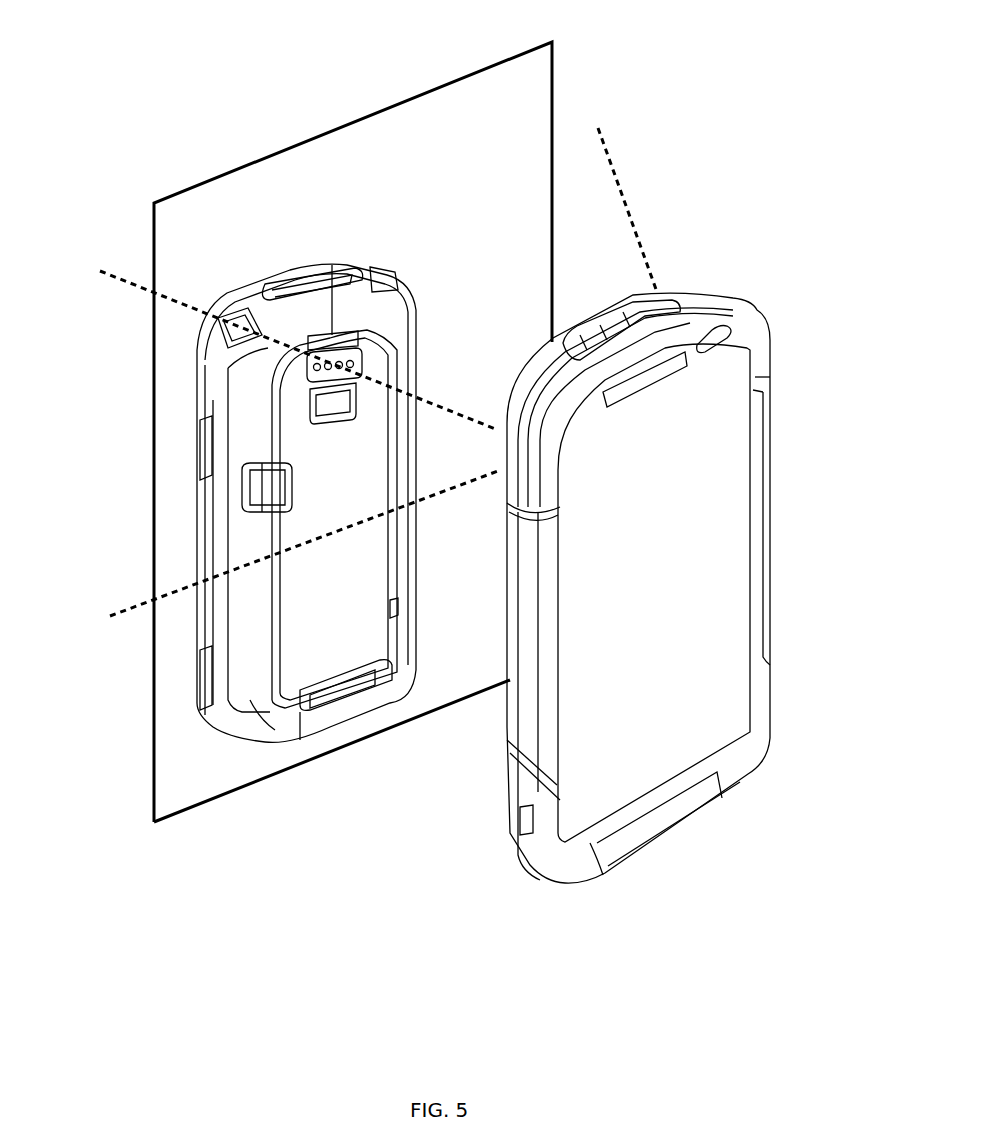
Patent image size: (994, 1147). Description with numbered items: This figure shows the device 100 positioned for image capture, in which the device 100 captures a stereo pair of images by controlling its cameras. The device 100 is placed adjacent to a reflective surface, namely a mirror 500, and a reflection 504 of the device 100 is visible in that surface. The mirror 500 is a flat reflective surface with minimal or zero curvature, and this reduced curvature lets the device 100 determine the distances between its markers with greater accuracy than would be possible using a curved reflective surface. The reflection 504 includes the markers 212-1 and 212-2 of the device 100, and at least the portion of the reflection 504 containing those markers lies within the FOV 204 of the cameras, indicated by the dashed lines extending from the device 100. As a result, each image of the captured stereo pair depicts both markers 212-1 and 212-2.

The mirror 500 is at (336, 112).
The reflection 504 is at (196, 378).
The device 100 is at (775, 293).
The FOV 204 is at (620, 184).
The marker 212-1 is at (362, 437).
The marker 212-2 is at (300, 322).